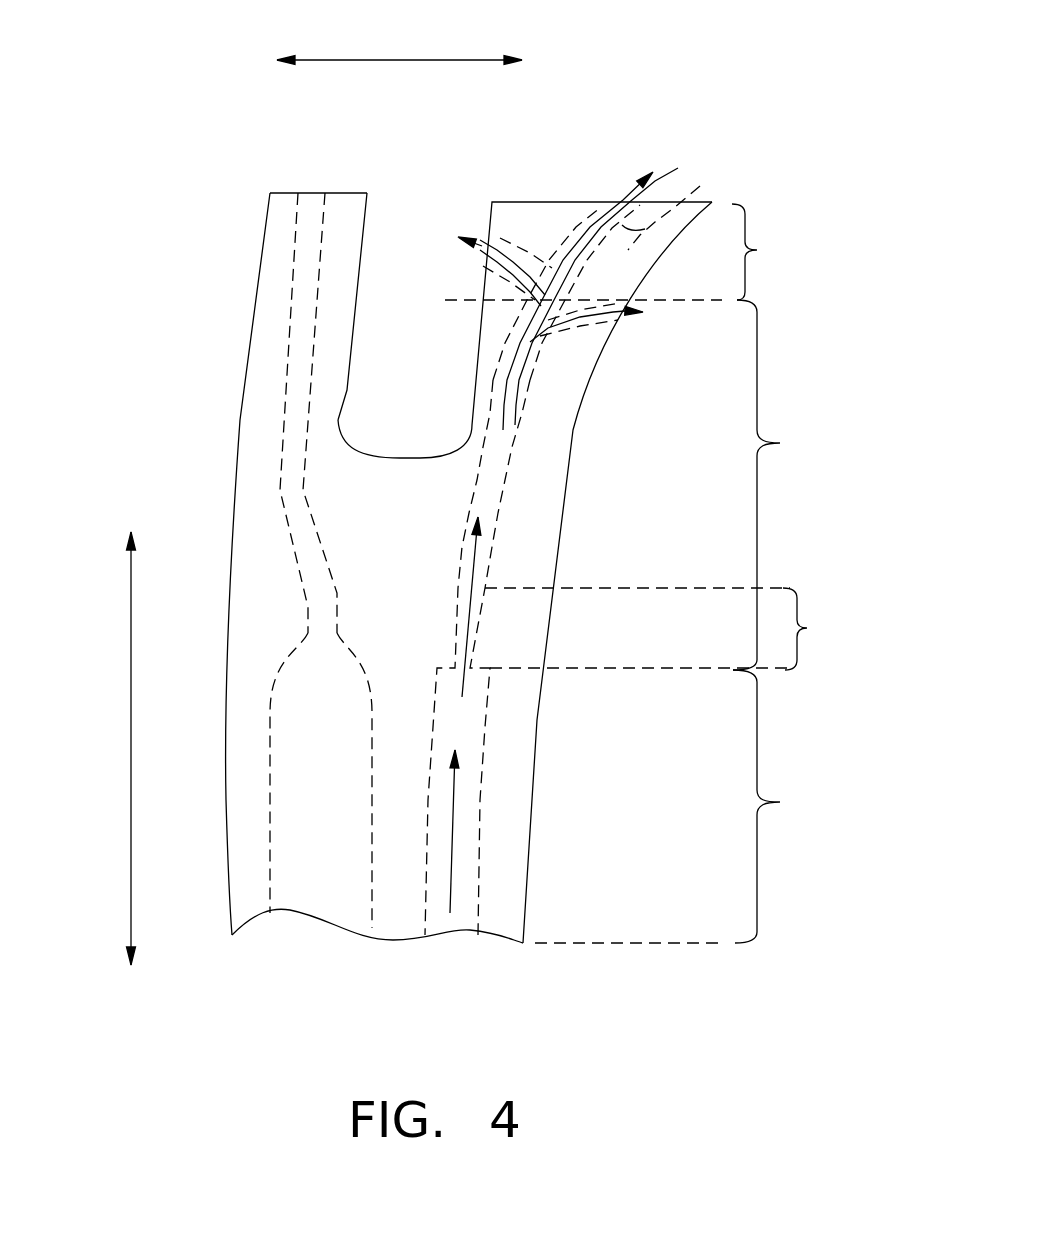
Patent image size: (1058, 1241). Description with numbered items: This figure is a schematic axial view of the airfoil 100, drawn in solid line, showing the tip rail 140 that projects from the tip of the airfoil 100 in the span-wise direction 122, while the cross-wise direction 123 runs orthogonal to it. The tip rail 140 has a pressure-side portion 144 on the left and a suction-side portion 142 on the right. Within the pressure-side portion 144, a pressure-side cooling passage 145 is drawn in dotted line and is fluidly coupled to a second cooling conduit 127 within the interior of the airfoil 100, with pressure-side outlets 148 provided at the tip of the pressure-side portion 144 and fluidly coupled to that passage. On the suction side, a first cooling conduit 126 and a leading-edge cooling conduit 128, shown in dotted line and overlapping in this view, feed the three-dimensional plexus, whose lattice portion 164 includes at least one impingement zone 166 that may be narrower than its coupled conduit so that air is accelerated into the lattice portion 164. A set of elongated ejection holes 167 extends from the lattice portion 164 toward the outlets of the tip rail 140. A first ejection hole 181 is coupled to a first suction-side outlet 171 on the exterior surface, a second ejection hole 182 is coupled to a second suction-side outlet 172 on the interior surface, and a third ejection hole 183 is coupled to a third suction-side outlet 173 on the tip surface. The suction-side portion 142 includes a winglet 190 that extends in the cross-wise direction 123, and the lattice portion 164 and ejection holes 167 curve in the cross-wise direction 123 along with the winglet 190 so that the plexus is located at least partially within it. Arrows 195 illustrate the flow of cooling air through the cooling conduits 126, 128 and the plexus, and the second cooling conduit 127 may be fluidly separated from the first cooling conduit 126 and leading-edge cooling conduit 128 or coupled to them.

The airfoil 100 is at (222, 472).
The span-wise direction 122 is at (131, 868).
The cross-wise direction 123 is at (382, 60).
The first cooling conduit 126 is at (780, 802).
The leading-edge cooling conduit 128 is at (732, 806).
The second cooling conduit 127 is at (327, 918).
The tip rail 140 is at (237, 250).
The suction-side portion 142 is at (521, 212).
The pressure-side portion 144 is at (280, 205).
The pressure-side cooling passage 145 is at (282, 336).
The pressure-side outlets 148 is at (310, 192).
The lattice portion 164 is at (780, 443).
The impingement zone 166 is at (807, 628).
The elongated ejection holes 167 is at (757, 250).
The first suction-side outlet 171 is at (582, 323).
The second suction-side outlet 172 is at (490, 247).
The third suction-side outlet 173 is at (678, 168).
The first ejection hole 181 is at (523, 405).
The second ejection hole 182 is at (510, 270).
The third ejection hole 183 is at (650, 226).
The winglet 190 is at (667, 262).
The arrows 195 is at (452, 845).